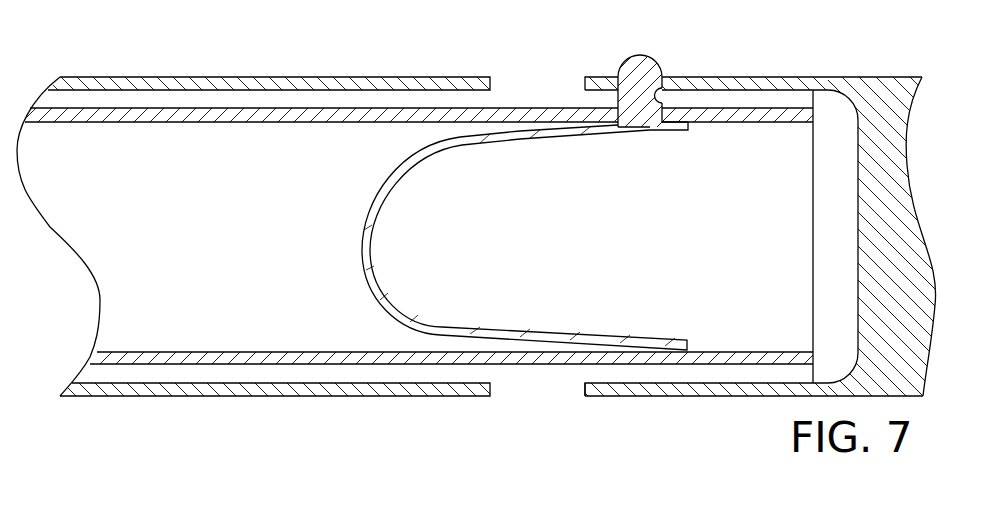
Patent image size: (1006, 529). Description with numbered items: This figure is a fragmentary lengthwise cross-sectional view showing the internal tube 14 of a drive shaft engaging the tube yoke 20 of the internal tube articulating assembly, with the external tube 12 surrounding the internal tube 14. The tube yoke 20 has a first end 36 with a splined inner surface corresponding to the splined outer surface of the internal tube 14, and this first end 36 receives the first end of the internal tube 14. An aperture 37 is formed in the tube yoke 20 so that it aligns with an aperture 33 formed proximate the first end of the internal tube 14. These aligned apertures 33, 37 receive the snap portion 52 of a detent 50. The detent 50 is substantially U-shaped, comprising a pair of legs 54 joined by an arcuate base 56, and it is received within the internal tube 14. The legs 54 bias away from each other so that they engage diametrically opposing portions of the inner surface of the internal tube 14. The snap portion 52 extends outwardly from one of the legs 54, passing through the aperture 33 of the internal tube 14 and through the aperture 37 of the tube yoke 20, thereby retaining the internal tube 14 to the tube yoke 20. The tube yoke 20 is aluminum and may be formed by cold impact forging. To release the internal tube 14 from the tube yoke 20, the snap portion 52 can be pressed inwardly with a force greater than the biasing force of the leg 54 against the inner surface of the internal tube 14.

The external tube 12 is at (376, 402).
The internal tube 14 is at (237, 370).
The tube yoke 20 is at (924, 200).
The aperture 33 is at (660, 121).
The first end 36 is at (585, 391).
The aperture 37 is at (663, 103).
The detent 50 is at (487, 237).
The snap portion 52 is at (632, 57).
The legs 54 is at (558, 140).
The arcuate base 56 is at (368, 227).